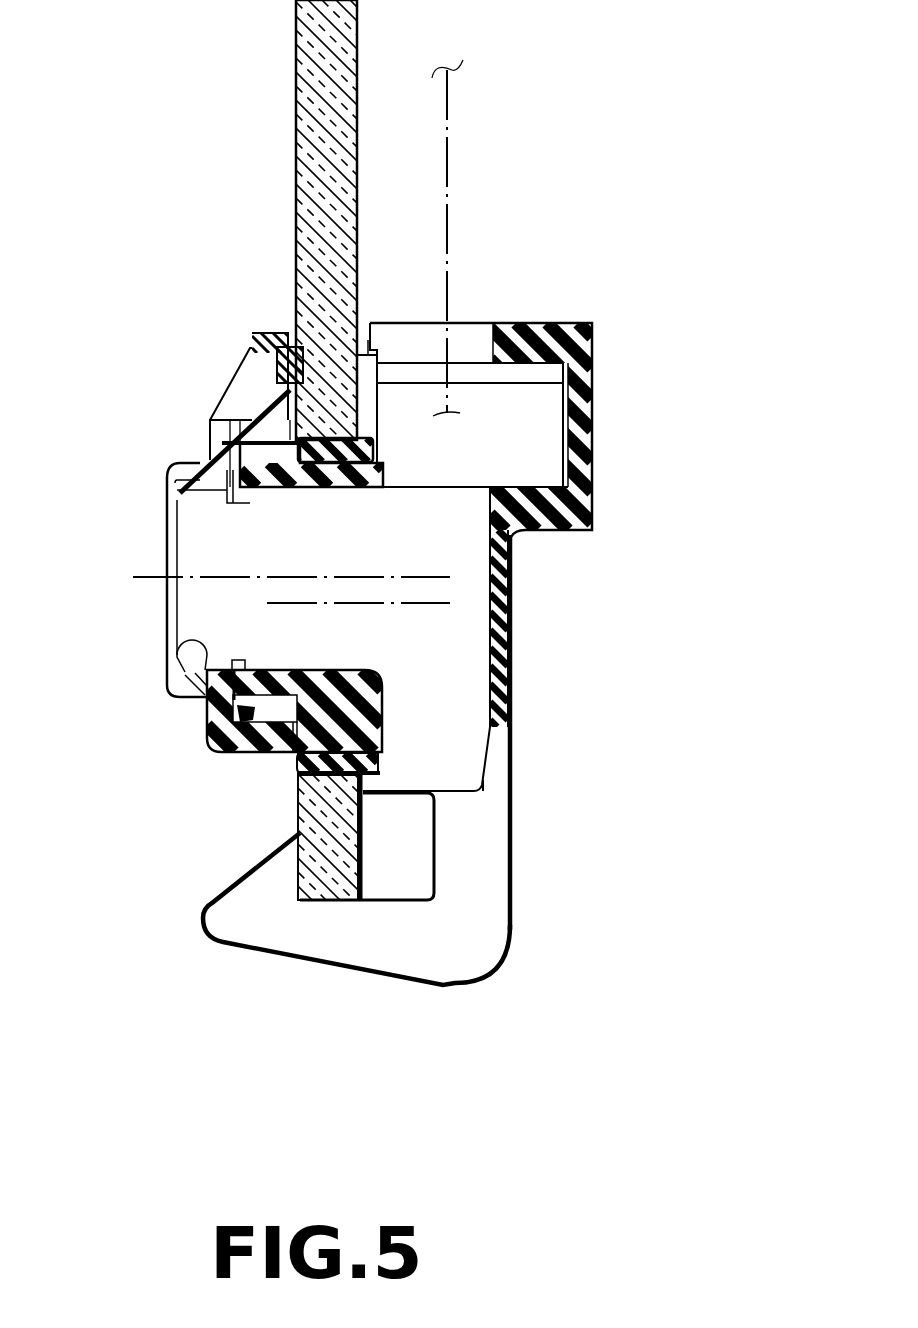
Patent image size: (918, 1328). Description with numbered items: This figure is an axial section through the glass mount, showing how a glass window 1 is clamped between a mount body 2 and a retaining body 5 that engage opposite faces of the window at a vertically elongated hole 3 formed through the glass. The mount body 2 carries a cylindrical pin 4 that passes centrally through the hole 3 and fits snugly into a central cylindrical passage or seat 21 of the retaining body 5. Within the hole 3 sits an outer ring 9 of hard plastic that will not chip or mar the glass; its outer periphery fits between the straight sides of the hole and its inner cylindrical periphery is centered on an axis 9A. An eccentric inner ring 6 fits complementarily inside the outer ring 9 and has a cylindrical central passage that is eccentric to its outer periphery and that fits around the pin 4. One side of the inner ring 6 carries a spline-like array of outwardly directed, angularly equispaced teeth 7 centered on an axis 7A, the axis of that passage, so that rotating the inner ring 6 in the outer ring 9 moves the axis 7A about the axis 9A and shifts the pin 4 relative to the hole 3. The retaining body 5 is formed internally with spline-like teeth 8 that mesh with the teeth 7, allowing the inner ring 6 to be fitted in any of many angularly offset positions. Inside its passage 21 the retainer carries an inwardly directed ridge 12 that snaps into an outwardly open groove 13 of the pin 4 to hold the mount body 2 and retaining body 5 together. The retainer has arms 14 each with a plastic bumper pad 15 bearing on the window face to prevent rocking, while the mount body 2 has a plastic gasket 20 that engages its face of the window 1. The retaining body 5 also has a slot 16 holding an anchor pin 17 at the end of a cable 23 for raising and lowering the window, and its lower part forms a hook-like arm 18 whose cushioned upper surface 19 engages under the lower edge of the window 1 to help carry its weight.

The glass window 1 is at (307, 77).
The mount body 2 is at (510, 990).
The hole 3 is at (335, 778).
The cylindrical pin 4 is at (347, 552).
The retaining body 5 is at (177, 697).
The eccentric inner ring 6 is at (490, 694).
The teeth 7 is at (248, 752).
The axis 7A is at (412, 573).
The spline-like teeth 8 is at (240, 712).
The outer ring 9 is at (385, 452).
The axis 9A is at (412, 610).
The ridge 12 is at (232, 521).
The groove 13 is at (236, 502).
The arms 14 is at (250, 368).
The plastic bumper pad 15 is at (258, 333).
The slot 16 is at (472, 340).
The anchor pin 17 is at (548, 415).
The hook-like arm 18 is at (477, 853).
The cushioned upper surface 19 is at (398, 907).
The plastic gasket 20 is at (370, 395).
The passage 21 is at (163, 643).
The cable 23 is at (450, 125).